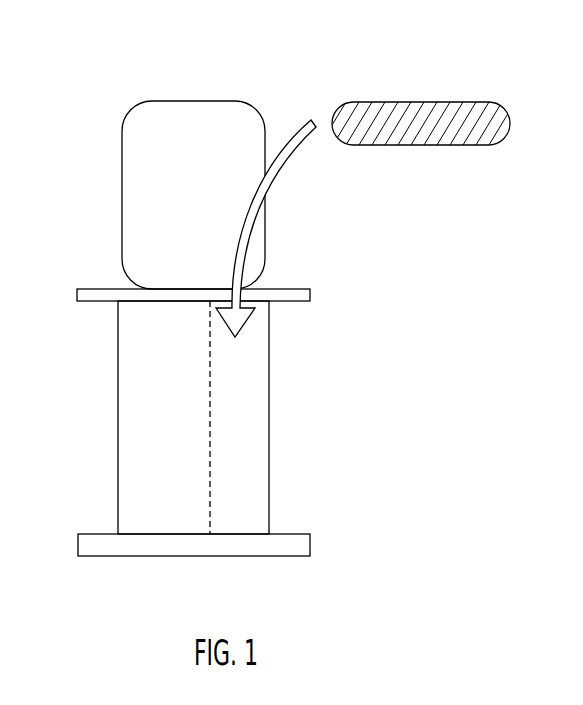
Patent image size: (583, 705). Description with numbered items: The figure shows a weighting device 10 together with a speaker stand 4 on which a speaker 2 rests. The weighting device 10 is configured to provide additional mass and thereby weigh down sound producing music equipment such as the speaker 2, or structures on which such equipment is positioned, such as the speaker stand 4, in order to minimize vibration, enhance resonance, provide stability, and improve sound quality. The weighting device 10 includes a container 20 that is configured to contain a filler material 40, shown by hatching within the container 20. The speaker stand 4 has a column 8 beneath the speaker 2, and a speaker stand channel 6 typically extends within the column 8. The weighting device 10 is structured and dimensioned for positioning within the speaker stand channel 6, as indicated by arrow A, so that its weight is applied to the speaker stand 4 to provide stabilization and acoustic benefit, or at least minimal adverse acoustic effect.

The speaker 2 is at (133, 110).
The speaker stand 4 is at (75, 301).
The speaker stand channel 6 is at (213, 452).
The column 8 is at (270, 393).
The weighting device 10 is at (483, 102).
The container 20 is at (494, 145).
The filler material 40 is at (438, 128).
The arrow A is at (291, 130).